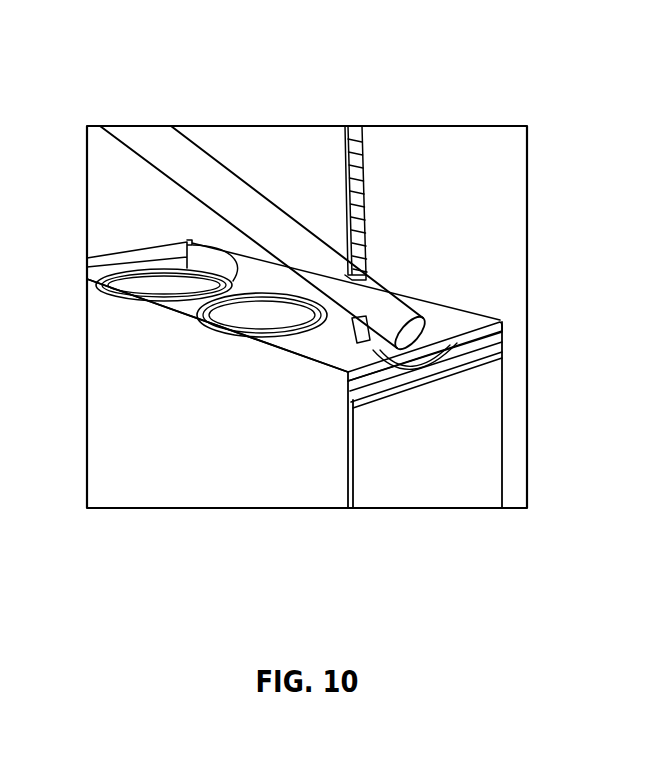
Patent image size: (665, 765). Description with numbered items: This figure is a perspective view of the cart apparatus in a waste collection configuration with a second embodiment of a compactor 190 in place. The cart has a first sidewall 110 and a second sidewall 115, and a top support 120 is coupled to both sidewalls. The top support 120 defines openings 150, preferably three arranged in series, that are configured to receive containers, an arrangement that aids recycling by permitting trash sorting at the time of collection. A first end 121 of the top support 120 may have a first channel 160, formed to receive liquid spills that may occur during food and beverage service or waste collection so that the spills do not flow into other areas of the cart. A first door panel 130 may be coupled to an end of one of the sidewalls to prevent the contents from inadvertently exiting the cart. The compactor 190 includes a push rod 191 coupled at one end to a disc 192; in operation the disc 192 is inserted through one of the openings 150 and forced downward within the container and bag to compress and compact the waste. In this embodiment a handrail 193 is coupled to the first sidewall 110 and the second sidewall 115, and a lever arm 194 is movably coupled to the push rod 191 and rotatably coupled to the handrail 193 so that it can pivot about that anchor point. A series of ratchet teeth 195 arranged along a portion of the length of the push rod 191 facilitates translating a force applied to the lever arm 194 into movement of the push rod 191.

The first sidewall 110 is at (155, 435).
The second sidewall 115 is at (437, 320).
The top support 120 is at (190, 315).
The first end of the top support 121 is at (500, 344).
The first door panel 130 is at (470, 461).
The opening 150 is at (115, 253).
The first channel 160 is at (490, 348).
The compactor 190 is at (397, 276).
The push rod 191 is at (350, 125).
The disc 192 is at (310, 352).
The handrail 193 is at (477, 327).
The lever arm 194 is at (168, 160).
The ratchet teeth 195 is at (365, 173).